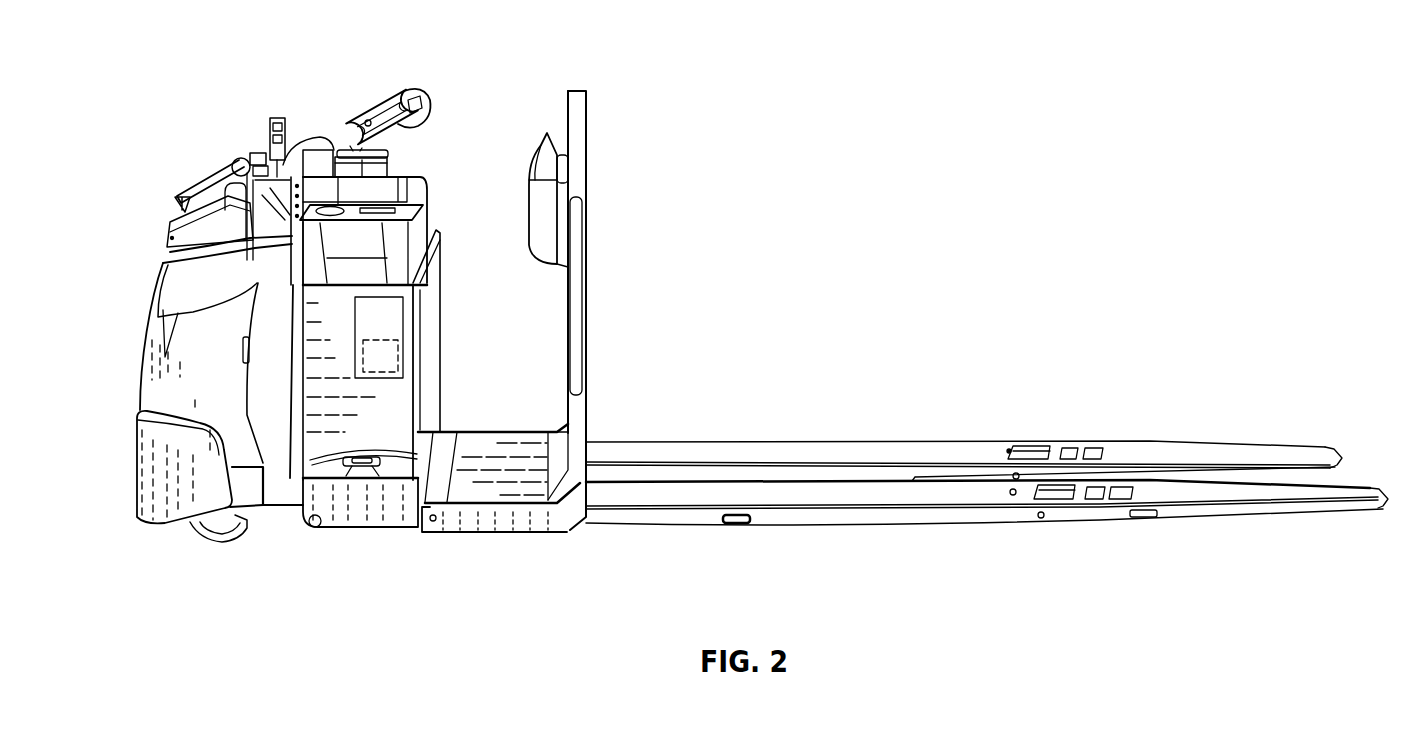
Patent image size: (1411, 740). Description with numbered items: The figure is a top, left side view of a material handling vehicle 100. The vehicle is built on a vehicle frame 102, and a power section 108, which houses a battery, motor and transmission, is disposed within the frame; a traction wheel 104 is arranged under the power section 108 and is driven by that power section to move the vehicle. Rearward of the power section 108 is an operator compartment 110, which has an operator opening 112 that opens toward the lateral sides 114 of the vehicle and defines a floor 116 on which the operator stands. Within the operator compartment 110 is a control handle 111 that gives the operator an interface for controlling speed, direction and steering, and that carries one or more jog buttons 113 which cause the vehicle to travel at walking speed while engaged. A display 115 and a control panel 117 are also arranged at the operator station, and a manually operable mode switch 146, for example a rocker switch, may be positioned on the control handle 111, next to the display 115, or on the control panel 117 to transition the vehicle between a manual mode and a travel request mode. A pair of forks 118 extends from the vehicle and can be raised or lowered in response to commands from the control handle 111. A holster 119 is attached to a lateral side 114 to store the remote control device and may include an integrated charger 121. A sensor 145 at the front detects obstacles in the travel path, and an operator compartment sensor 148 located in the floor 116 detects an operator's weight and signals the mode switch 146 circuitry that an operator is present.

The material handling vehicle 100 is at (1078, 162).
The vehicle frame 102 is at (592, 103).
The traction wheel 104 is at (163, 530).
The power section 108 is at (123, 377).
The operator compartment 110 is at (550, 310).
The control handle 111 is at (404, 93).
The operator opening 112 is at (583, 328).
The jog button 113 is at (366, 118).
The lateral side 114 is at (350, 423).
The display 115 is at (233, 160).
The floor 116 is at (503, 447).
The control panel 117 is at (247, 163).
The forks 118 is at (1310, 450).
The holster 119 is at (408, 318).
The integrated charger 121 is at (398, 360).
The sensor 145 is at (173, 203).
The mode switch 146 is at (318, 157).
The operator compartment sensor 148 is at (488, 440).